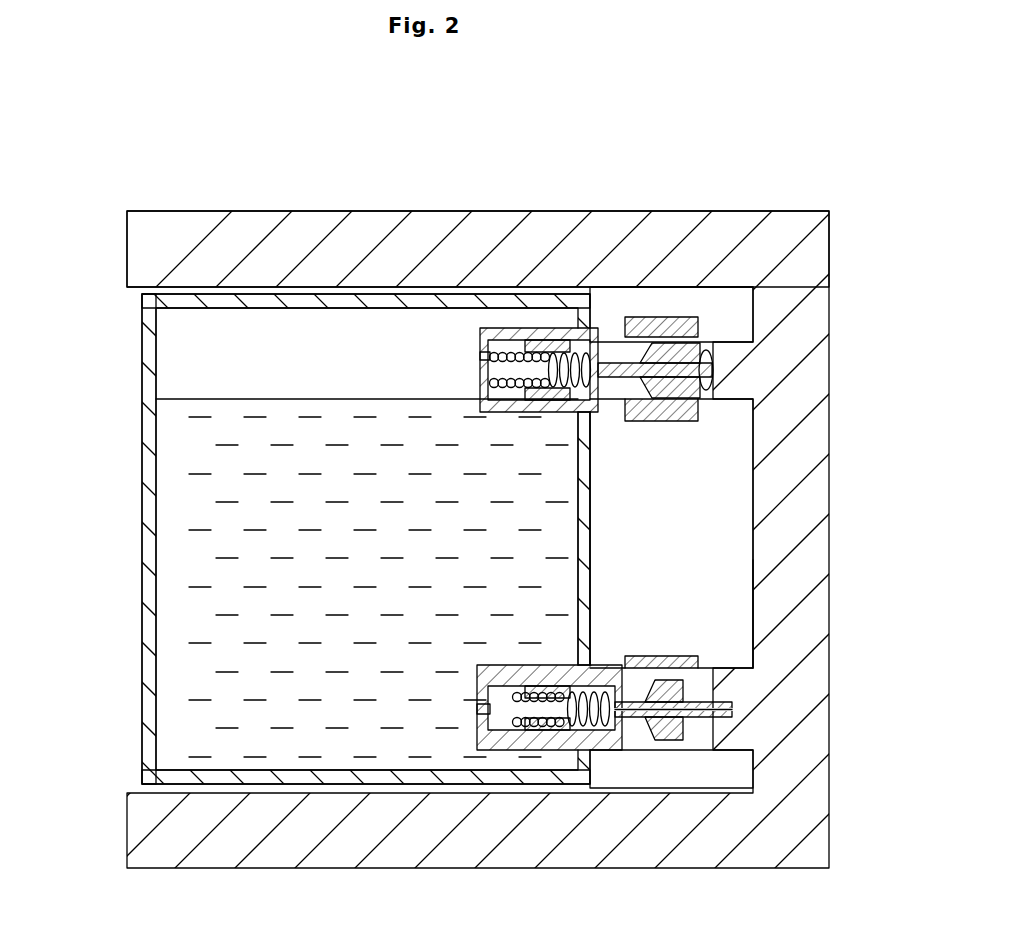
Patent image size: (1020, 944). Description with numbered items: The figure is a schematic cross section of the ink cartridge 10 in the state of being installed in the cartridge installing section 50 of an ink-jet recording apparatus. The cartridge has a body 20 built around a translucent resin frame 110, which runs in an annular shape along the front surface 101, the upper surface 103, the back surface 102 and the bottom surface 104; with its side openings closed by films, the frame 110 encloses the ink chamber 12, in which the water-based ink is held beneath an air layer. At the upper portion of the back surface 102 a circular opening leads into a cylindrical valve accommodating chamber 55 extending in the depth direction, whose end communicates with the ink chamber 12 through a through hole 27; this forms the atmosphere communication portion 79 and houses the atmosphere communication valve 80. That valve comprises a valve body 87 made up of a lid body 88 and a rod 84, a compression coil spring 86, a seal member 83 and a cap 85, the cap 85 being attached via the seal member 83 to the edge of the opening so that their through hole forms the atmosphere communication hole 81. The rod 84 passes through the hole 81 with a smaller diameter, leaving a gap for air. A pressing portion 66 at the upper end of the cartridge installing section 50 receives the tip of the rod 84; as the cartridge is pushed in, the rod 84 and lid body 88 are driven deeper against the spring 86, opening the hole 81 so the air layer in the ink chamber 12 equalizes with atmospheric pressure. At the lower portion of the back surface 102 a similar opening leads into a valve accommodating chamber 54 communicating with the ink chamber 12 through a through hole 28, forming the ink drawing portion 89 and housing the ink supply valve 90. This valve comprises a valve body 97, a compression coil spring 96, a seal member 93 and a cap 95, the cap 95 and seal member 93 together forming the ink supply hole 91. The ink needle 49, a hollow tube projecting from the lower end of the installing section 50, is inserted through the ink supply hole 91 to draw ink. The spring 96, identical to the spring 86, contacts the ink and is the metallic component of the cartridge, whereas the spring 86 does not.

The ink cartridge 10 is at (122, 320).
The ink chamber 12 is at (389, 602).
The body 20 is at (130, 415).
The through hole 27 is at (490, 356).
The through hole 28 is at (488, 711).
The ink needle 49 is at (714, 752).
The cartridge installing section 50 is at (245, 232).
The valve accommodating chamber 54 is at (540, 680).
The valve accommodating chamber 55 is at (486, 340).
The pressing portion 66 is at (726, 340).
The atmosphere communication portion 79 is at (722, 420).
The atmosphere communication valve 80 is at (660, 455).
The atmosphere communication hole 81 is at (712, 362).
The seal member 83 is at (683, 420).
The rod 84 is at (640, 370).
The cap 85 is at (628, 422).
The compression coil spring 86 is at (507, 406).
The valve body 87 is at (553, 410).
The lid body 88 is at (602, 352).
The ink drawing portion 89 is at (722, 645).
The ink supply valve 90 is at (656, 620).
The ink supply hole 91 is at (735, 710).
The seal member 93 is at (683, 742).
The cap 95 is at (633, 655).
The compression coil spring 96 is at (505, 676).
The valve body 97 is at (612, 738).
The front surface 101 is at (143, 708).
The back surface 102 is at (590, 556).
The upper surface 103 is at (356, 296).
The bottom surface 104 is at (375, 785).
The frame 110 is at (590, 520).